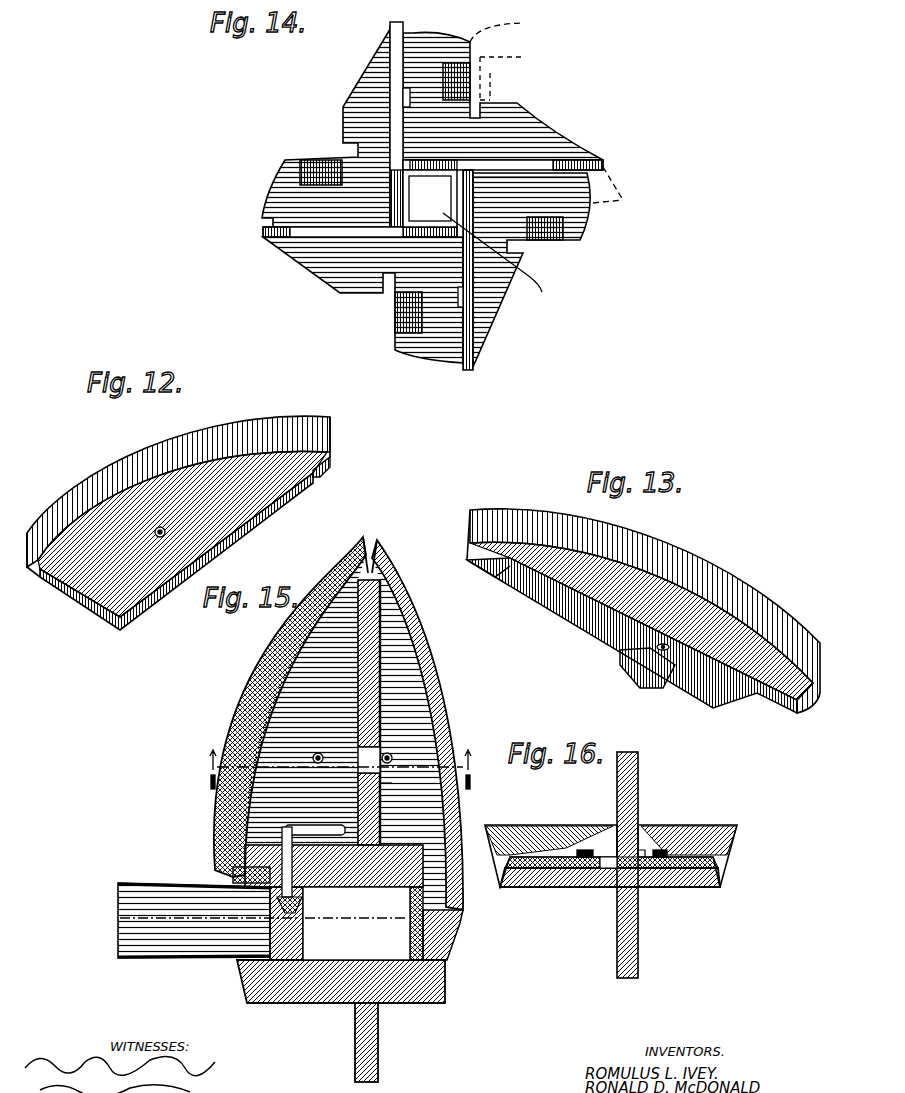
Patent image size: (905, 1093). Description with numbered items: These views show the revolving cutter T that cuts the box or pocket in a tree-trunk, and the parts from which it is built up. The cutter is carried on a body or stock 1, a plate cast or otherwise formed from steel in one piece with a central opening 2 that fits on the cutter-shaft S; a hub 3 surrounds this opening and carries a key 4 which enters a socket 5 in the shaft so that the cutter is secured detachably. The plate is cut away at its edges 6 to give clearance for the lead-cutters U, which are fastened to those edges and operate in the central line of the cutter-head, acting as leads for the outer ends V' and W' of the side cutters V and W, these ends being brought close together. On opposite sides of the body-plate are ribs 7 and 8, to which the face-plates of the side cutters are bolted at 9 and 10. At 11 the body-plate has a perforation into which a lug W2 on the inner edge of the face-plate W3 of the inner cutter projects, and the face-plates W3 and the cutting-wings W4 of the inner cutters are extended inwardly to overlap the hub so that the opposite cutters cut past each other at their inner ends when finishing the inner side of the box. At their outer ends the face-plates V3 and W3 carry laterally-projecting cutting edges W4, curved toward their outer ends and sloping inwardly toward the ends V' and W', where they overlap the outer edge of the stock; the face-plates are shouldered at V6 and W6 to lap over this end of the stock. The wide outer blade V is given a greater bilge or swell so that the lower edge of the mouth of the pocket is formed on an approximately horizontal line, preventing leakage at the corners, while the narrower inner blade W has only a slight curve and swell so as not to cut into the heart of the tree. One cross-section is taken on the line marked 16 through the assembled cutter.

In FIG. 14, the body or stock 1 is at (340, 260).
In FIG. 15, the body or stock 1 is at (390, 690).
In FIG. 14, the central opening 2 is at (500, 260).
In FIG. 14, the hub 3 is at (447, 178).
In FIG. 15, the key 4 is at (220, 827).
In FIG. 15, the socket 5 is at (233, 877).
In FIG. 14, the edges of the cutter-stock 6 is at (318, 160).
In FIG. 14, the rib 7 is at (522, 162).
In FIG. 16, the rib 7 is at (640, 763).
In FIG. 16, the rib 8 is at (678, 887).
In FIG. 15, the bolt fastening 9 is at (318, 752).
In FIG. 16, the bolt fastening 9 is at (573, 850).
In FIG. 15, the bolt fastening 10 is at (392, 753).
In FIG. 16, the bolt fastening 10 is at (653, 848).
In FIG. 14, the perforation 11 is at (405, 95).
In FIG. 15, the perforation 11 is at (383, 783).
In FIG. 16, the perforation 11 is at (641, 827).
In FIG. 15, the section line 16 is at (341, 769).
In FIG. 15, the shaft S is at (210, 937).
In FIG. 14, the cutter T is at (259, 118).
In FIG. 14, the lead-cutters U is at (546, 113).
In FIG. 12, the outer side cutter V is at (178, 491).
In FIG. 15, the outer side cutter V is at (285, 707).
In FIG. 16, the outer side cutter V is at (551, 835).
In FIG. 12, the outer end of cutter V V' is at (348, 444).
In FIG. 12, the face-plate of cutter V V3 is at (182, 540).
In FIG. 15, the face-plate of cutter V V3 is at (280, 683).
In FIG. 16, the face-plate of cutter V V3 is at (532, 887).
In FIG. 12, the shoulder of face-plate V3 V6 is at (307, 478).
In FIG. 15, the shoulder of face-plate V3 V6 is at (363, 560).
In FIG. 13, the inner side cutter W is at (641, 621).
In FIG. 15, the inner side cutter W is at (434, 725).
In FIG. 16, the inner side cutter W is at (687, 836).
In FIG. 13, the outer end of cutter W W' is at (456, 525).
In FIG. 13, the lug W2 is at (633, 672).
In FIG. 15, the lug W2 is at (363, 753).
In FIG. 16, the lug W2 is at (613, 887).
In FIG. 13, the face-plate of cutter W W3 is at (632, 635).
In FIG. 15, the face-plate of cutter W W3 is at (427, 660).
In FIG. 16, the face-plate of cutter W W3 is at (713, 887).
In FIG. 12, the cutting-wings or cutting edges W4 is at (67, 493).
In FIG. 13, the cutting-wings or cutting edges W4 is at (763, 597).
In FIG. 13, the shoulder of face-plate W3 W6 is at (503, 578).
In FIG. 15, the shoulder of face-plate W3 W6 is at (390, 563).